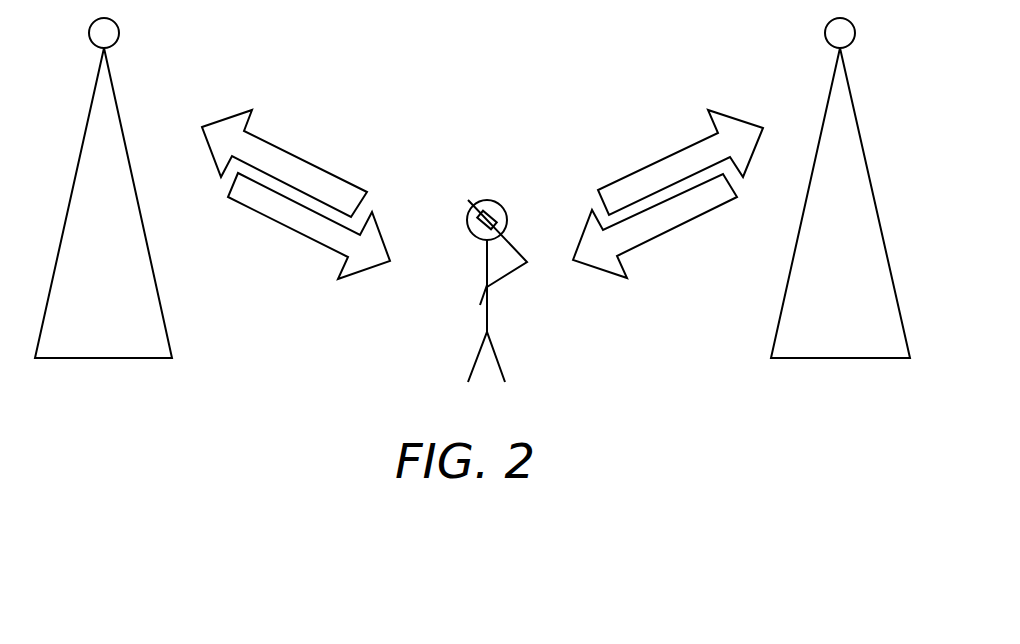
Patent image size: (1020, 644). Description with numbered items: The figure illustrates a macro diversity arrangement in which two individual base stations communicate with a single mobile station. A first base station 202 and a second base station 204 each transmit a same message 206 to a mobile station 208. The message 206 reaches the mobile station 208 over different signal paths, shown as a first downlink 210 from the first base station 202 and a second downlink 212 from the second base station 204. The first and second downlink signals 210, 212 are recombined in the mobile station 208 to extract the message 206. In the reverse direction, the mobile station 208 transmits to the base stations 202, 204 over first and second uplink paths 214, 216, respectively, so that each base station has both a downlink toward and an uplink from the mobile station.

The first base station 202 is at (100, 360).
The second base station 204 is at (836, 360).
The message 206 is at (482, 235).
The mobile station 208 is at (488, 200).
The first downlink 210 is at (293, 230).
The second downlink 212 is at (677, 228).
The first uplink path 214 is at (305, 158).
The second uplink path 216 is at (657, 160).